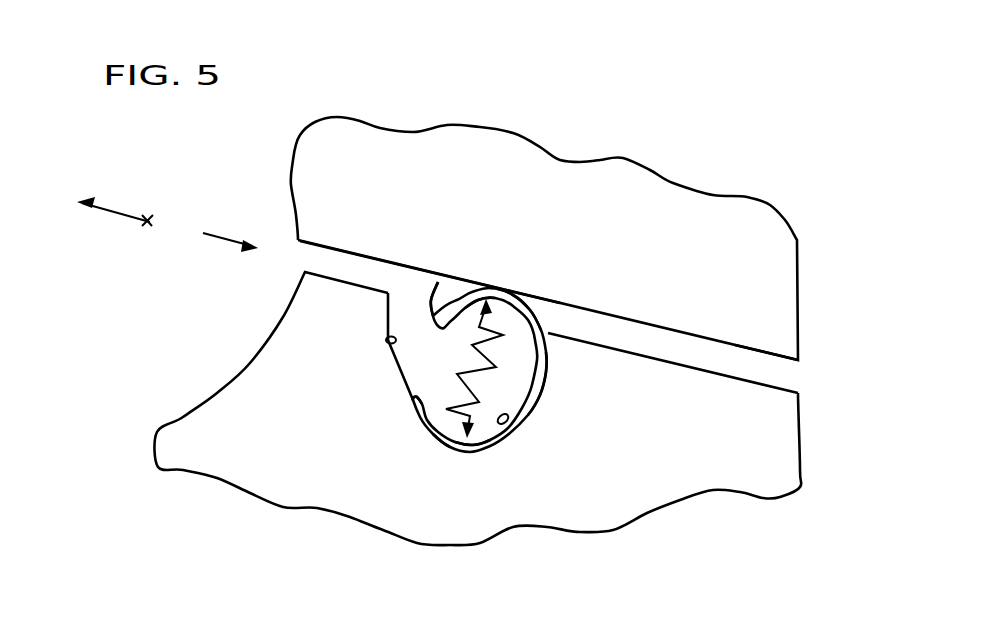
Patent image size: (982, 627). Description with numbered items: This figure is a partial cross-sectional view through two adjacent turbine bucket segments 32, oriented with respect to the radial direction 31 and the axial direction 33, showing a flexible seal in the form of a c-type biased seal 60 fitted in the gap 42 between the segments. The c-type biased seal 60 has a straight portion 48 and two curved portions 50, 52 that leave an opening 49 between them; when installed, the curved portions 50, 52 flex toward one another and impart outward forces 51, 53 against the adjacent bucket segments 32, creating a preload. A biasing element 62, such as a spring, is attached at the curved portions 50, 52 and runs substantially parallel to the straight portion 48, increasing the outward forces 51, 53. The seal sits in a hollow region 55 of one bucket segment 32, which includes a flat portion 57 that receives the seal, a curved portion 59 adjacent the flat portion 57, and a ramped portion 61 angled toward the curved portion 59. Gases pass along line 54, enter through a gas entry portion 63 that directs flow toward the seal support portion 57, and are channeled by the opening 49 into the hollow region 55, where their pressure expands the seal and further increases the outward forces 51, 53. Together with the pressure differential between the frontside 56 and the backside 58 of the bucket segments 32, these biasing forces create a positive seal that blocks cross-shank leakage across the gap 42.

The radial direction 31 is at (148, 213).
The turbine bucket segments 32 is at (613, 157).
The axial direction 33 is at (117, 211).
The gap 42 is at (363, 270).
The straight portion 48 is at (508, 427).
The opening 49 is at (450, 373).
The curved portion 50 is at (414, 408).
The outward force 51 is at (485, 447).
The curved portion 52 is at (438, 282).
The outward force 53 is at (478, 298).
The line 54 is at (227, 238).
The hollow region 55 is at (519, 402).
The frontside 56 is at (208, 347).
The flat portion 57 is at (542, 386).
The backside 58 is at (850, 396).
The curved portion 59 is at (445, 448).
The c-type biased seal 60 is at (538, 330).
The ramped portion 61 is at (388, 340).
The biasing element 62 is at (517, 296).
The gas entry portion 63 is at (388, 293).